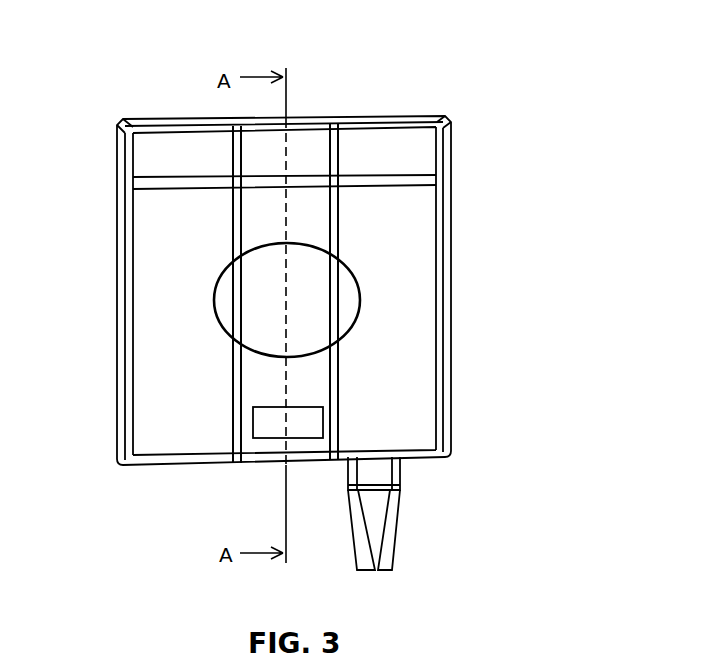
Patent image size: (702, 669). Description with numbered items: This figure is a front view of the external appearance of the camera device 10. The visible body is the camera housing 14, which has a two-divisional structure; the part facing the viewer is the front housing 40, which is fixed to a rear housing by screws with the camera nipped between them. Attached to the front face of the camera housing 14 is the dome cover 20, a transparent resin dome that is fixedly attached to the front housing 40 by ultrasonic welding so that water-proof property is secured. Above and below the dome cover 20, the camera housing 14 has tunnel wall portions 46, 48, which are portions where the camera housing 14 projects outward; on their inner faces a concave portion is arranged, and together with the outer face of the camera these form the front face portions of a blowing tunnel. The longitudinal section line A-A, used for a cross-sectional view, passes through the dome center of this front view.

The camera device 10 is at (428, 70).
The camera housing 14 is at (453, 213).
The dome cover 20 is at (243, 305).
The front housing 40 is at (412, 307).
The tunnel wall portion 46 is at (308, 153).
The tunnel wall portion 48 is at (255, 390).